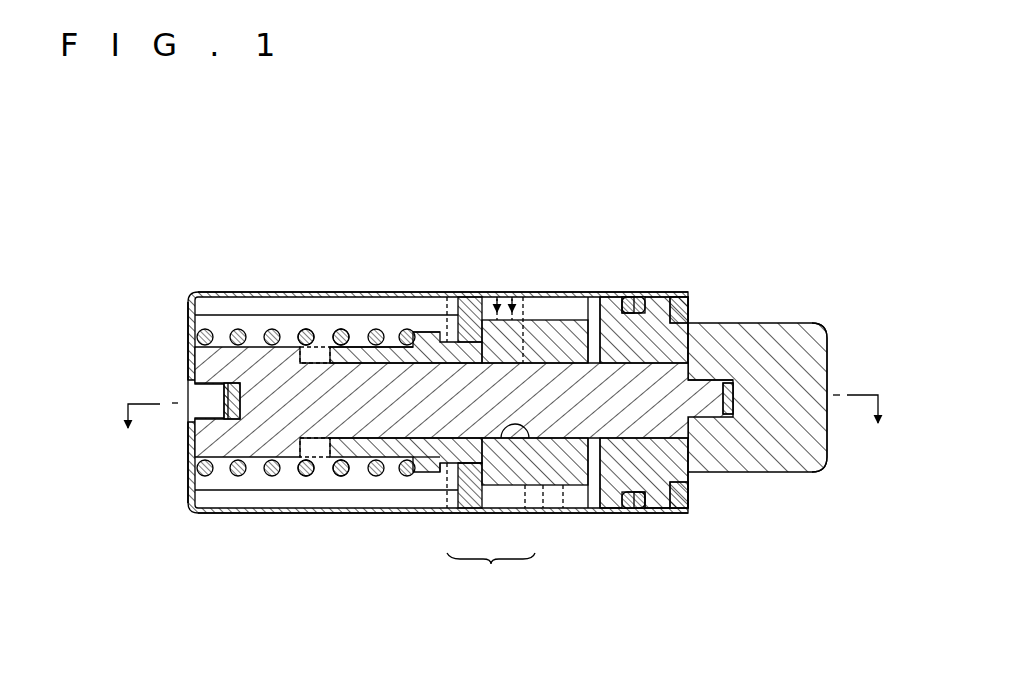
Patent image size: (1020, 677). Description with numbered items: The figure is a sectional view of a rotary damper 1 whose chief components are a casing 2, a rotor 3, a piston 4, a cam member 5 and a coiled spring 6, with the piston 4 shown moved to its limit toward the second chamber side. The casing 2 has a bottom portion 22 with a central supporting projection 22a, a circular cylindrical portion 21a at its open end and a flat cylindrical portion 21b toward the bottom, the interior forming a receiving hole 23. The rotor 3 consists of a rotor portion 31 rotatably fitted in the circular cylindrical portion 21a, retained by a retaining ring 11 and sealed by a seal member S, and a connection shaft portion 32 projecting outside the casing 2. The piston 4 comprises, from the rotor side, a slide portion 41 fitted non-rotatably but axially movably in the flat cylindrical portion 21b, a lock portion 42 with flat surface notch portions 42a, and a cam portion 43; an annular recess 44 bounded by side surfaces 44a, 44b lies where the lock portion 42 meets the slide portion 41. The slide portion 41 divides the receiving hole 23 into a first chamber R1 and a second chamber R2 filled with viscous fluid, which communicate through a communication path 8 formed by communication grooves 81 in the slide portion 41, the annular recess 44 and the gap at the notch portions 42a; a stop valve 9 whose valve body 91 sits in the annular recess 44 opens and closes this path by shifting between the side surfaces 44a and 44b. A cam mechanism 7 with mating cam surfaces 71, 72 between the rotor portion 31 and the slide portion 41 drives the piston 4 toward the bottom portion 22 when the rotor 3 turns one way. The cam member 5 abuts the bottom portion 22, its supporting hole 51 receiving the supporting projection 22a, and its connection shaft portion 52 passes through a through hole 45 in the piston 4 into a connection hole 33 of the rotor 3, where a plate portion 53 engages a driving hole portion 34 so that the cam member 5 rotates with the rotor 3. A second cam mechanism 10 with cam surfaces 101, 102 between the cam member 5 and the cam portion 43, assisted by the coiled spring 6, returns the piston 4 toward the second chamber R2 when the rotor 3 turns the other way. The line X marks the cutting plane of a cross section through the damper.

The rotary damper 1 is at (630, 222).
The casing 2 is at (285, 290).
The rotor 3 is at (757, 322).
The piston 4 is at (497, 291).
The cam member 5 is at (220, 340).
The coiled spring 6 is at (237, 328).
The cam mechanism 7 is at (620, 203).
The communication path 8 is at (512, 291).
The stop valve 9 is at (491, 569).
The second cam mechanism 10 is at (287, 190).
The retaining ring 11 is at (688, 490).
The circular cylindrical portion 21a is at (664, 291).
The flat cylindrical portion 21b is at (258, 291).
The bottom portion 22 is at (190, 320).
The supporting projection 22a is at (205, 425).
The receiving hole 23 is at (358, 500).
The rotor portion 31 is at (667, 291).
The connection shaft portion 32 is at (787, 323).
The connection hole 33 is at (655, 303).
The driving hole portion 34 is at (735, 437).
The slide portion 41 is at (584, 510).
The lock portion 42 is at (402, 420).
The flat surface notch portion 42a is at (420, 291).
The cam portion 43 is at (378, 291).
The annular recess 44 is at (465, 294).
The side surface 44a is at (475, 508).
The side surface 44b is at (433, 513).
The through hole 45 is at (546, 470).
The supporting hole 51 is at (218, 396).
The connection shaft portion 52 is at (436, 467).
The plate portion 53 is at (712, 382).
The cam surface 71 is at (598, 291).
The cam surface 72 is at (575, 291).
The communication groove 81 is at (543, 291).
The valve body 91 is at (468, 508).
The cam surface 101 is at (350, 291).
The cam surface 102 is at (330, 291).
The first chamber R1 is at (252, 478).
The second chamber R2 is at (673, 504).
The seal member S is at (653, 509).
The section line X is at (504, 415).